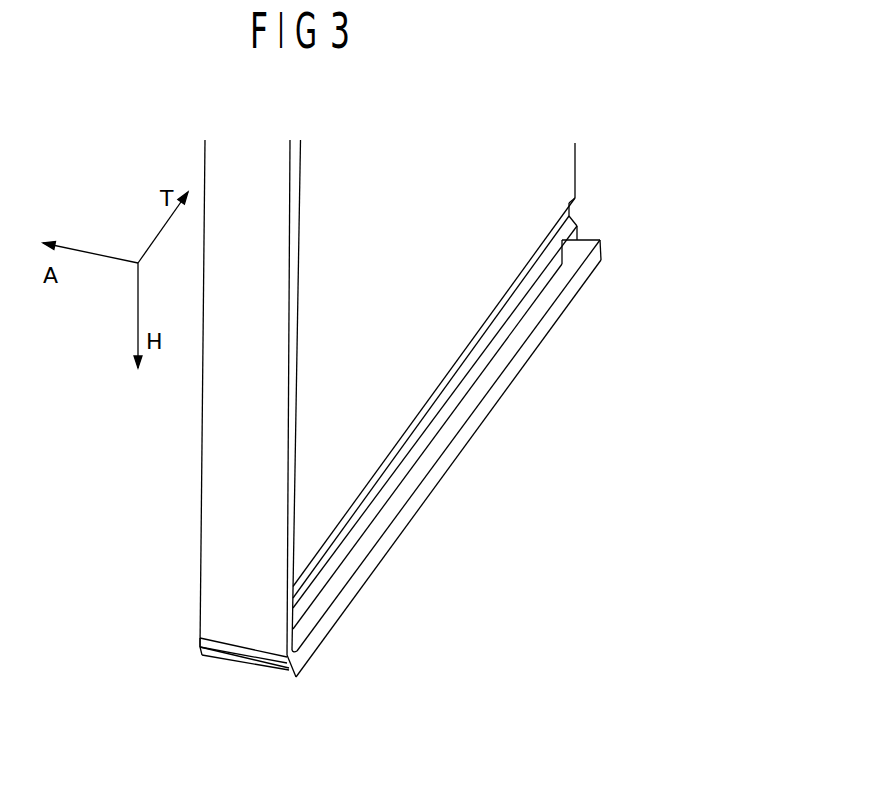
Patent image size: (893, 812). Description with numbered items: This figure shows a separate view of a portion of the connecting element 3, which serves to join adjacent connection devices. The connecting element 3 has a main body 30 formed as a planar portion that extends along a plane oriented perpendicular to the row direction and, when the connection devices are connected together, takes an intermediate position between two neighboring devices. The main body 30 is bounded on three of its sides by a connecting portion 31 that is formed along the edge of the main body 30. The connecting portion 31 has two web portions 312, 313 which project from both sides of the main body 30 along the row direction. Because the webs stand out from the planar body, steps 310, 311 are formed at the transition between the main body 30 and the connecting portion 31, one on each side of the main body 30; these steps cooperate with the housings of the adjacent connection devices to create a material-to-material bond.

The connecting element 3 is at (371, 585).
The main body 30 is at (425, 368).
The step 310 is at (375, 522).
The connecting portion 31 is at (239, 668).
The step 311 is at (178, 397).
The web portion 312 is at (296, 678).
The web portion 313 is at (199, 655).